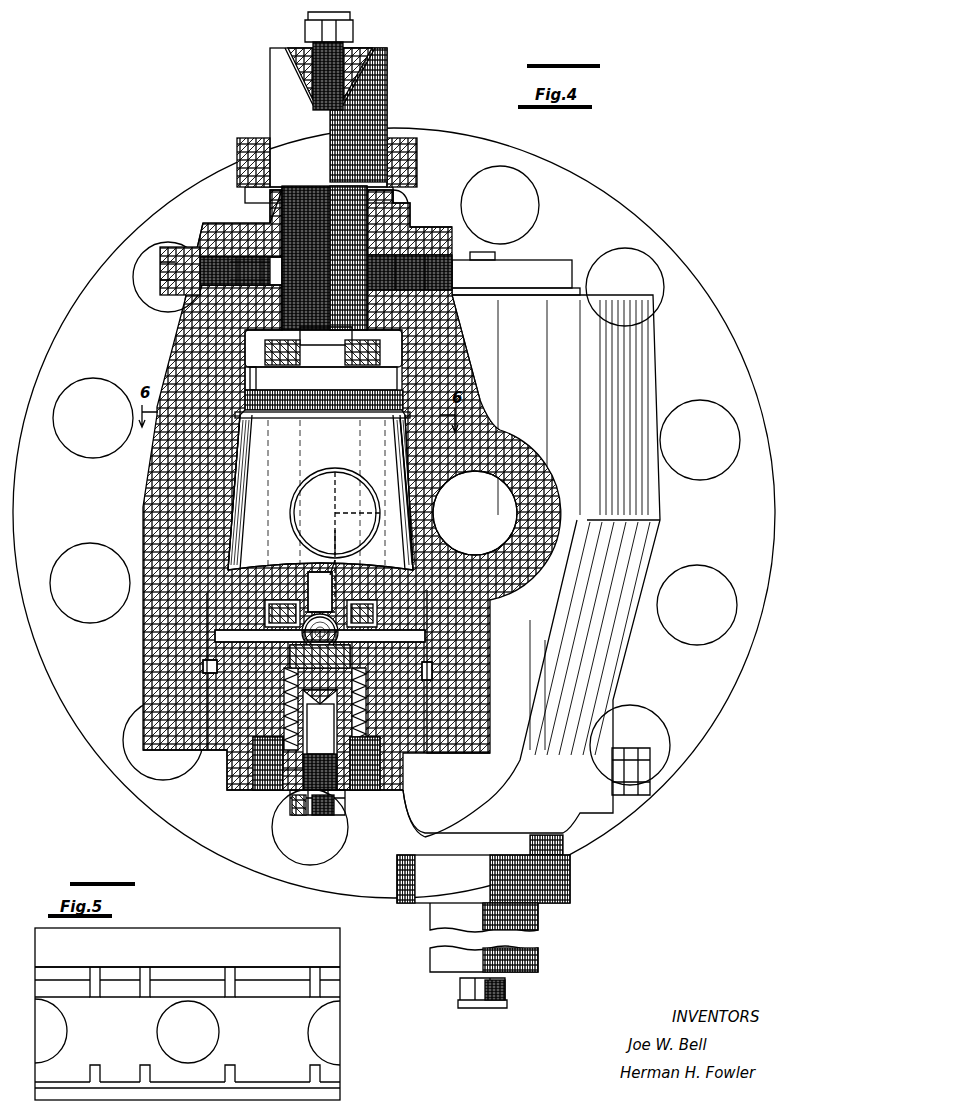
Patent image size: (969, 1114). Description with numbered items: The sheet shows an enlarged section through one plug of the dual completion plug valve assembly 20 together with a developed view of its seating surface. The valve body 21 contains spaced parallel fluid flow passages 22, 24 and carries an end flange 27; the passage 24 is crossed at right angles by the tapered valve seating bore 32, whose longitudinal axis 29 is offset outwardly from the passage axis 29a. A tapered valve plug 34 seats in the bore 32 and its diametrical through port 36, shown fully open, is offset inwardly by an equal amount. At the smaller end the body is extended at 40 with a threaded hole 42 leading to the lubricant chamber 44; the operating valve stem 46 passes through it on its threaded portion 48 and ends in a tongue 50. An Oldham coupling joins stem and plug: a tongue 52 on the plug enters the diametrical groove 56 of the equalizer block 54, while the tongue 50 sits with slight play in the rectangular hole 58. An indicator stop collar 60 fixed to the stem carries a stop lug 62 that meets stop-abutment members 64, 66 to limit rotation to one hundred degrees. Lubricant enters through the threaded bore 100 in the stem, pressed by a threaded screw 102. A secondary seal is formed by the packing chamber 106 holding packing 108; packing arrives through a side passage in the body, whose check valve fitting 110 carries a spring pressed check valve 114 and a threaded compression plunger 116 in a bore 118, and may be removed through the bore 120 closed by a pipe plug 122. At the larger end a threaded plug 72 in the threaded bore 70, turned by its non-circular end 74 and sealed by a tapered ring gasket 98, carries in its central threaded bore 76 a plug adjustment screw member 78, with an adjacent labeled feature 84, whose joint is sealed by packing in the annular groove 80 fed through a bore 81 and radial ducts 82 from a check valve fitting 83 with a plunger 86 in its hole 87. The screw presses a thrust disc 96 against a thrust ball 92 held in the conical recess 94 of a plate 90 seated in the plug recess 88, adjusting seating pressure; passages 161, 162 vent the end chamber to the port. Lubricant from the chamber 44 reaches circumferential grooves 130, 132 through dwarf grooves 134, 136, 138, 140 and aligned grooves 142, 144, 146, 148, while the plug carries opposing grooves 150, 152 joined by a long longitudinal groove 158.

In FIG. 4, the dual completion plug valve assembly 20 is at (453, 112).
In FIG. 4, the valve body 21 is at (470, 360).
In FIG. 4, the fluid flow passage 22 is at (471, 560).
In FIG. 4, the fluid flow passage 24 is at (395, 515).
In FIG. 5, the fluid flow passage 24 is at (196, 1042).
In FIG. 4, the end flange 27 is at (596, 838).
In FIG. 4, the longitudinal axis 29 is at (330, 500).
In FIG. 4, the longitudinal axis 29a is at (338, 510).
In FIG. 4, the tapered valve seating bore 32 is at (238, 478).
In FIG. 5, the tapered valve seating bore 32 is at (340, 972).
In FIG. 4, the tapered valve plug 34 is at (425, 592).
In FIG. 4, the diametrical through port 36 is at (332, 470).
In FIG. 4, the valve body extension 40 is at (392, 224).
In FIG. 4, the threaded hole 42 is at (270, 207).
In FIG. 4, the lubricant chamber 44 is at (405, 346).
In FIG. 5, the lubricant chamber 44 is at (340, 948).
In FIG. 4, the operating valve stem 46 is at (398, 92).
In FIG. 4, the threaded portion 48 is at (340, 190).
In FIG. 4, the tongue 50 is at (352, 352).
In FIG. 4, the tongue 52 is at (248, 378).
In FIG. 4, the equalizer block 54 is at (275, 330).
In FIG. 4, the diametrical groove 56 is at (348, 390).
In FIG. 4, the hole 58 is at (310, 366).
In FIG. 4, the indicator stop collar 60 is at (417, 160).
In FIG. 4, the stop lug 62 is at (246, 191).
In FIG. 4, the stop-abutment member 64 is at (290, 188).
In FIG. 4, the stop-abutment member 66 is at (410, 196).
In FIG. 4, the threaded bore 70 is at (433, 720).
In FIG. 4, the threaded plug 72 is at (226, 752).
In FIG. 4, the non-circular end 74 is at (400, 797).
In FIG. 4, the central threaded bore 76 is at (352, 722).
In FIG. 4, the plug adjustment screw member 78 is at (280, 720).
In FIG. 4, the annular packing groove 80 is at (284, 690).
In FIG. 4, the bore 81 is at (289, 773).
In FIG. 4, the radial duct 82 is at (360, 704).
In FIG. 4, the check valve fitting 83 is at (303, 804).
In FIG. 4, the bolt head 84 is at (369, 686).
In FIG. 4, the plunger 86 is at (322, 817).
In FIG. 4, the hole 87 is at (303, 817).
In FIG. 4, the recess 88 is at (278, 597).
In FIG. 4, the plate 90 is at (325, 588).
In FIG. 4, the thrust ball 92 is at (322, 652).
In FIG. 4, the conical recess 94 is at (321, 613).
In FIG. 4, the thrust disc 96 is at (351, 652).
In FIG. 4, the tapered ring gasket 98 is at (432, 650).
In FIG. 4, the threaded bore 100 is at (316, 80).
In FIG. 4, the threaded screw 102 is at (352, 26).
In FIG. 4, the packing chamber 106 is at (409, 261).
In FIG. 4, the packing 108 is at (241, 244).
In FIG. 4, the check valve fitting 110 is at (172, 312).
In FIG. 4, the spring pressed check valve 114 is at (245, 287).
In FIG. 4, the threaded compression plunger 116 is at (160, 300).
In FIG. 4, the bore 118 is at (158, 264).
In FIG. 4, the bore 120 is at (458, 302).
In FIG. 4, the pipe plug 122 is at (458, 272).
In FIG. 4, the circumferential groove 130 is at (418, 419).
In FIG. 5, the circumferential groove 130 is at (340, 992).
In FIG. 4, the circumferential groove 132 is at (215, 648).
In FIG. 5, the circumferential groove 132 is at (335, 1085).
In FIG. 5, the dwarf groove 134 is at (145, 967).
In FIG. 5, the dwarf groove 136 is at (230, 967).
In FIG. 5, the dwarf groove 138 is at (320, 960).
In FIG. 5, the dwarf groove 140 is at (95, 967).
In FIG. 5, the dwarf groove 142 is at (145, 1065).
In FIG. 5, the dwarf groove 144 is at (236, 1068).
In FIG. 5, the dwarf groove 146 is at (318, 1068).
In FIG. 5, the dwarf groove 148 is at (94, 1065).
In FIG. 4, the circumferential groove 150 is at (268, 420).
In FIG. 4, the circumferential groove 152 is at (405, 560).
In FIG. 4, the long longitudinal groove 158 is at (240, 534).
In FIG. 4, the passage 161 is at (349, 535).
In FIG. 4, the passage 162 is at (330, 575).